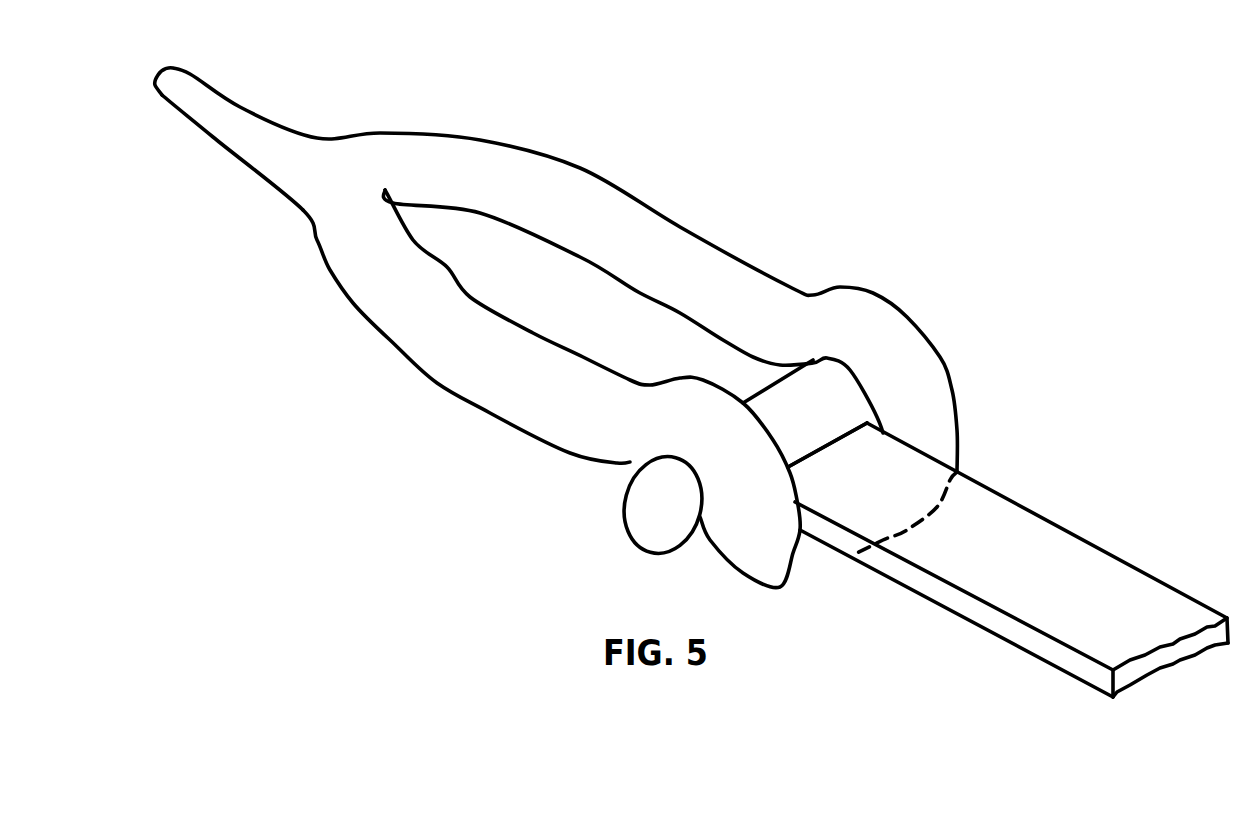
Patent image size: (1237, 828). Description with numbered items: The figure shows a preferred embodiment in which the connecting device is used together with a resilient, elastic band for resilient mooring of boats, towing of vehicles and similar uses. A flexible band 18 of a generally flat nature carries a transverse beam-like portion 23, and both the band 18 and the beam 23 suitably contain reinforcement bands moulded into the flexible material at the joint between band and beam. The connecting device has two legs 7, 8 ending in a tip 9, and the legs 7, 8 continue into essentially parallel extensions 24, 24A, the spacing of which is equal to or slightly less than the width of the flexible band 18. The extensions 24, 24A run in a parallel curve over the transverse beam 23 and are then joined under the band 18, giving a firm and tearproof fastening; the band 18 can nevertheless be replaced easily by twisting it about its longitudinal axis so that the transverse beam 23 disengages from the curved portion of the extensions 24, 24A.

The leg 7 is at (472, 162).
The leg 8 is at (377, 297).
The loop tip 9 is at (232, 128).
The flexible band 18 is at (1050, 562).
The transverse beam-like portion 23 is at (660, 518).
The extension 24 is at (702, 273).
The extension 24A is at (508, 397).